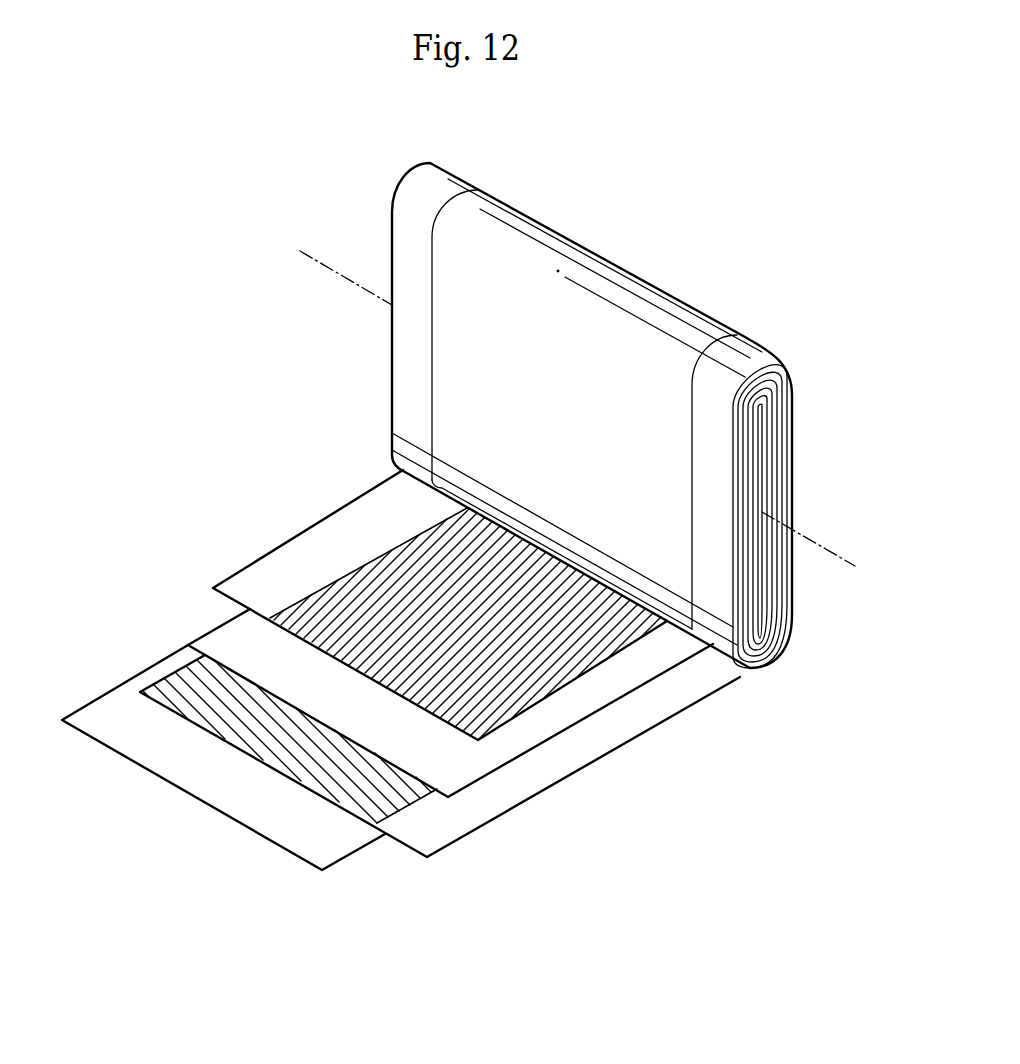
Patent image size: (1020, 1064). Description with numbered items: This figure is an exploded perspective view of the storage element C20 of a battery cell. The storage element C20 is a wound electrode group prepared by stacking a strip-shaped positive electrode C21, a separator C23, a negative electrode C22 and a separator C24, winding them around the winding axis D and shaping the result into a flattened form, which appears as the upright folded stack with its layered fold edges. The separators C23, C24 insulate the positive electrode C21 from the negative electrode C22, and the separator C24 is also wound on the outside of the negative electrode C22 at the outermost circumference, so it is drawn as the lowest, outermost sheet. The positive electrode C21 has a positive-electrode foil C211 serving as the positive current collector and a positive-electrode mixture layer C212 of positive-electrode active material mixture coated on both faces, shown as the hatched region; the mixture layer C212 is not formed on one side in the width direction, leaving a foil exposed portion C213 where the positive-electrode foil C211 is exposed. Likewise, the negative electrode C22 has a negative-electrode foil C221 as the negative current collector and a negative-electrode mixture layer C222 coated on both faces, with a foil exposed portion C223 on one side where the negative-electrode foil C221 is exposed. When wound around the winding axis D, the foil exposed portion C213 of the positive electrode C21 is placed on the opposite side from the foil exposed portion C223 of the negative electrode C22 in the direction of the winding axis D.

The storage element C20 is at (803, 247).
The positive electrode C21 is at (457, 613).
The positive-electrode foil C211 is at (262, 547).
The positive-electrode mixture layer C212 is at (566, 657).
The foil exposed portion C213 is at (380, 508).
The negative electrode C22 is at (418, 762).
The negative-electrode foil C221 is at (440, 852).
The negative-electrode mixture layer C222 is at (377, 791).
The foil exposed portion C223 is at (541, 762).
The separator C23 is at (225, 640).
The separator C24 is at (105, 713).
The winding axis D is at (581, 410).